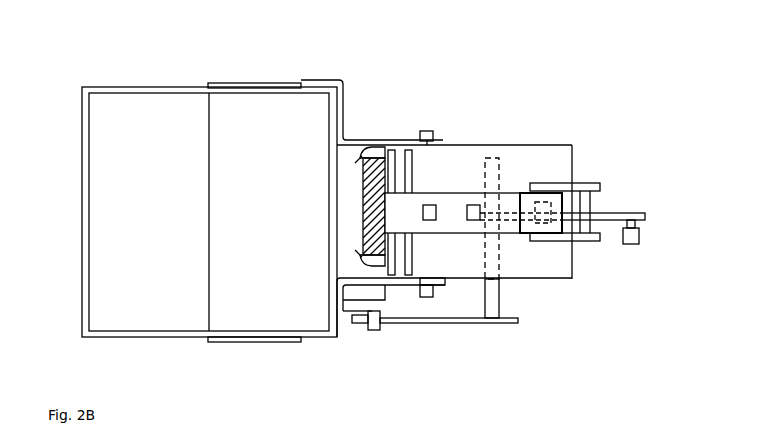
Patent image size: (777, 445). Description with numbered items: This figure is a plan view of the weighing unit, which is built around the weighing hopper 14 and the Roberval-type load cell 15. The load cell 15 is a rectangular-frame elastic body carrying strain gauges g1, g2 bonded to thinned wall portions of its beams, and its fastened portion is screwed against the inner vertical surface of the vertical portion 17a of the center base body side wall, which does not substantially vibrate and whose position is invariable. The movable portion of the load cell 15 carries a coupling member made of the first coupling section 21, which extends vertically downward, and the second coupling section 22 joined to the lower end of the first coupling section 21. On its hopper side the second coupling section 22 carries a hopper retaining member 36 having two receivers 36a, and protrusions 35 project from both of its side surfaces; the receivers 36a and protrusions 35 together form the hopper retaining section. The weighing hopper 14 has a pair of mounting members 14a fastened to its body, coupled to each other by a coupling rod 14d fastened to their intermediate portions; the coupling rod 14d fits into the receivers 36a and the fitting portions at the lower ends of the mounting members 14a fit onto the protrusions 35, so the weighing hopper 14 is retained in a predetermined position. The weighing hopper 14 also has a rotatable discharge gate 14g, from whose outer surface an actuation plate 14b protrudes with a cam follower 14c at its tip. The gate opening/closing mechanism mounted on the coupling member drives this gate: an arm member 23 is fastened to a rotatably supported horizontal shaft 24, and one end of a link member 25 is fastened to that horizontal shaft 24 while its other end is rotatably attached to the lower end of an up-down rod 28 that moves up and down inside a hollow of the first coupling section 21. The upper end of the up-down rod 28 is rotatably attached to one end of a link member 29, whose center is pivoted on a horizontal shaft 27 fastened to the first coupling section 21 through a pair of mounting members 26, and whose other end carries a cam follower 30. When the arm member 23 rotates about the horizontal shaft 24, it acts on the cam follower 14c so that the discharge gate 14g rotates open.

The weighing hopper 14 is at (132, 84).
The mounting member 14a is at (341, 80).
The actuation plate 14b is at (348, 313).
The cam follower 14c is at (372, 330).
The coupling rod 14d is at (405, 147).
The discharge gate 14g is at (217, 272).
The load cell 15 is at (458, 191).
The vertical portion 17a is at (362, 238).
The first coupling section 21 is at (563, 198).
The second coupling section 22 is at (560, 280).
The arm member 23 is at (445, 325).
The horizontal shaft 24 is at (503, 298).
The link member 25 is at (512, 207).
The mounting member 26 is at (595, 183).
The horizontal shaft 27 is at (592, 205).
The up-down rod 28 is at (545, 202).
The link member 29 is at (623, 212).
The cam follower 30 is at (628, 245).
The protrusion 35 is at (427, 131).
The hopper retaining member 36 is at (400, 277).
The receiver 36a is at (365, 150).
The strain gauge g1 is at (429, 205).
The strain gauge g2 is at (472, 205).